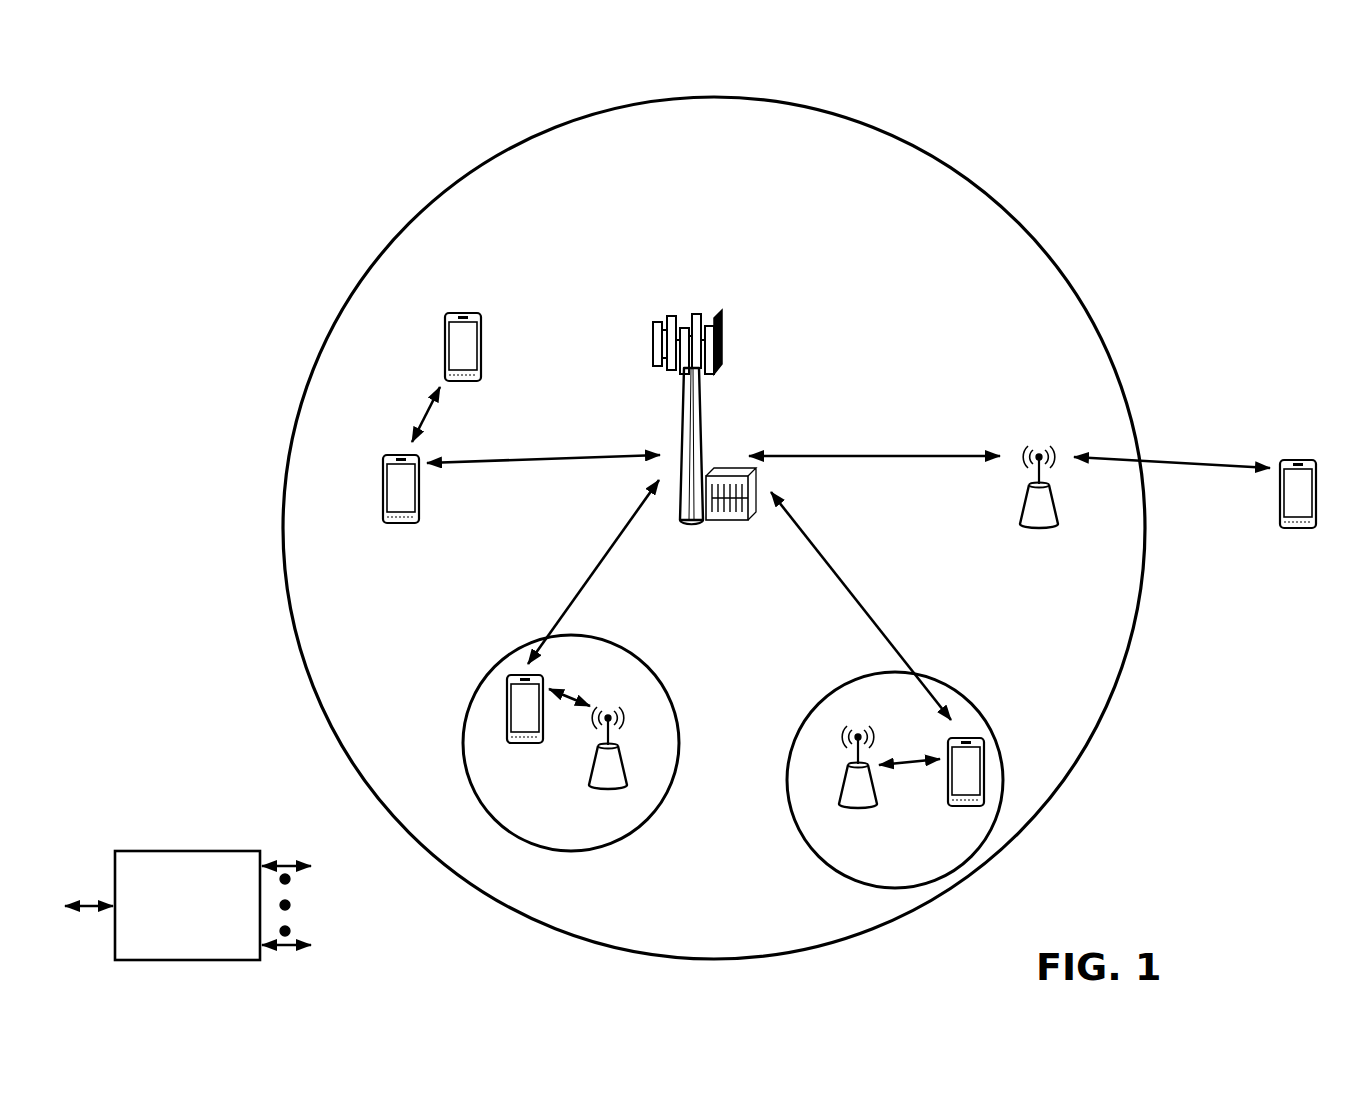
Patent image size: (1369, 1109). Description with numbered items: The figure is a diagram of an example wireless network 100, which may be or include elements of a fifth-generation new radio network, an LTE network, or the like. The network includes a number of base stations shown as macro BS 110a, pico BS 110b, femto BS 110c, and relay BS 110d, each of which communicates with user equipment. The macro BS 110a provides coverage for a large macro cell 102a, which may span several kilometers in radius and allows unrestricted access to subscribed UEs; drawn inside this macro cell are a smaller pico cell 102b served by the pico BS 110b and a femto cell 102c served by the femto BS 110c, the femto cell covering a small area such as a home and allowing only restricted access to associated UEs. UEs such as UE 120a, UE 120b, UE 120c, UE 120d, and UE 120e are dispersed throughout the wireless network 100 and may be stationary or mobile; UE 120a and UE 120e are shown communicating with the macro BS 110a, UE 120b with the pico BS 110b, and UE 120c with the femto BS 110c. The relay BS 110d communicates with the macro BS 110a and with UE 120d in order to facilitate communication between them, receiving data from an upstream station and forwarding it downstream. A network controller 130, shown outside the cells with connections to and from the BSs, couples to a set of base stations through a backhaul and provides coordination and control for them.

The wireless network 100 is at (170, 90).
The macro cell 102a is at (1000, 200).
The pico cell 102b is at (664, 675).
The femto cell 102c is at (830, 690).
The macro BS 110a is at (712, 300).
The pico BS 110b is at (631, 778).
The femto BS 110c is at (842, 792).
The relay BS 110d is at (1037, 444).
The UE 120a is at (383, 478).
The UE 120b is at (513, 748).
The UE 120c is at (950, 808).
The UE 120d is at (1308, 460).
The UE 120e is at (444, 335).
The network controller 130 is at (185, 851).